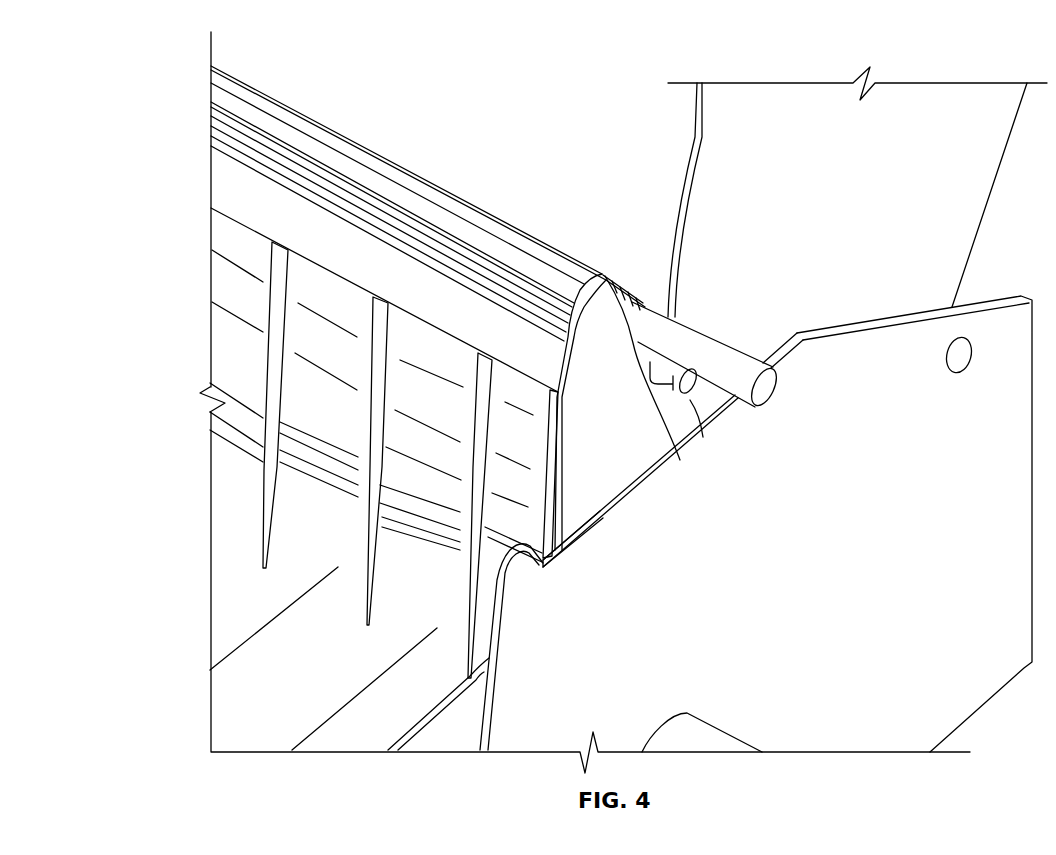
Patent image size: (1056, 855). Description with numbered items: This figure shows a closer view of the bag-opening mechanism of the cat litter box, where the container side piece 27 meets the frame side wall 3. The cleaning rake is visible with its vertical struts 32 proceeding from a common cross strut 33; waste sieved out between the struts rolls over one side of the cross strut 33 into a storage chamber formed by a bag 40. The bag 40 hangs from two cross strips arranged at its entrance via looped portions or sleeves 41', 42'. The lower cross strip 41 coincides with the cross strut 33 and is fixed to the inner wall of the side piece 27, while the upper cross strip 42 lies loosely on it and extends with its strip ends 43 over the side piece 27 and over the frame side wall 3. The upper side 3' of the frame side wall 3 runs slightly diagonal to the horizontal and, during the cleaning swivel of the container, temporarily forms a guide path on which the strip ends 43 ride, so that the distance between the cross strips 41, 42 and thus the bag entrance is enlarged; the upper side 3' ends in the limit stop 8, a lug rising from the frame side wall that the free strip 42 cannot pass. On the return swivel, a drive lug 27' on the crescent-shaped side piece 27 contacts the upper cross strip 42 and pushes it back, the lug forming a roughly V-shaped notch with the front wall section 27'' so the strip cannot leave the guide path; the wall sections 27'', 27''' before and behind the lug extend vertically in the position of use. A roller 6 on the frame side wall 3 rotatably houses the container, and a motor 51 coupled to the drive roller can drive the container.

The frame side wall 3 is at (922, 524).
The upper side of frame side wall 3' is at (673, 450).
The roller 6 is at (960, 357).
The limit stop 8 is at (541, 568).
The side piece of container 27 is at (989, 195).
The drive lug 27' is at (652, 386).
The front wall section 27'' is at (666, 200).
The side partial wall section 27''' is at (595, 539).
The vertical struts 32 is at (262, 470).
The cross strut 33 is at (445, 303).
The bag 40 is at (360, 382).
The lower cross strip 41 is at (703, 432).
The looped portion 41' is at (392, 209).
The upper cross strip 42 is at (702, 336).
The looped portion 42' is at (428, 186).
The strip end 43 is at (768, 388).
The motor 51 is at (738, 737).